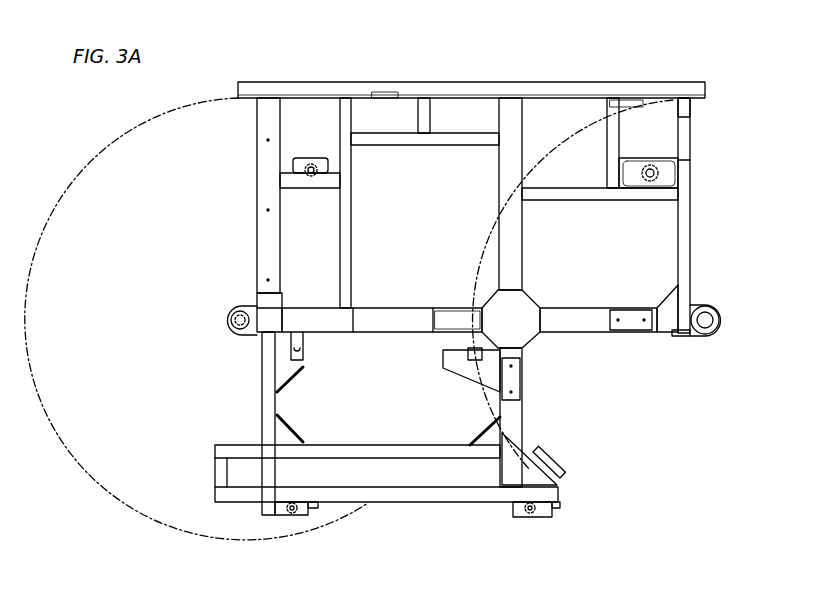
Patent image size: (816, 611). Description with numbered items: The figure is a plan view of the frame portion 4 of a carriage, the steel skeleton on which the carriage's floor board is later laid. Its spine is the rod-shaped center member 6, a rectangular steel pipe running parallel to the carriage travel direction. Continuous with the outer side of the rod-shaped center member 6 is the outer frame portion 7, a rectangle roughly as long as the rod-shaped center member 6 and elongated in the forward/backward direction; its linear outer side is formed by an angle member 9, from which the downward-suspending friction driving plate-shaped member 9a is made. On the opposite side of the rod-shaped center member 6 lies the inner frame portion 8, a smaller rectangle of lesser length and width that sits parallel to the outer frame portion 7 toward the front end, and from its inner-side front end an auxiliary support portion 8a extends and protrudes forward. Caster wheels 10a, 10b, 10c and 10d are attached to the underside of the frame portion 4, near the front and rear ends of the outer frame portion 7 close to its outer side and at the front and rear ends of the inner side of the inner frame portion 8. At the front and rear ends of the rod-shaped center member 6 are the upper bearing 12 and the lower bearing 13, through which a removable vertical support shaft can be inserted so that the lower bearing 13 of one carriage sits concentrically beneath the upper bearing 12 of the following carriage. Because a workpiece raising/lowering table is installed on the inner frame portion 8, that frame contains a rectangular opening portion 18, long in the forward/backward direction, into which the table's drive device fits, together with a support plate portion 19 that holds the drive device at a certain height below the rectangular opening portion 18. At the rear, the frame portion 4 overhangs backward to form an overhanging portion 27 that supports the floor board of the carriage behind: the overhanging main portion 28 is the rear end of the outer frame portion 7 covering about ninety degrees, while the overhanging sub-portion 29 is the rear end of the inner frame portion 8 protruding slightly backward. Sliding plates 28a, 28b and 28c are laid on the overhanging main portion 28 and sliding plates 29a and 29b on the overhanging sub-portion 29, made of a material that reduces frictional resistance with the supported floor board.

The frame portion 4 is at (238, 257).
The rod-shaped center member 6 is at (401, 320).
The outer frame portion 7 is at (257, 228).
The inner frame portion 8 is at (262, 412).
The auxiliary support portion 8a is at (215, 475).
The angle member 9 is at (556, 92).
The friction driving plate-shaped member 9a is at (395, 96).
The caster wheel 10a is at (322, 170).
The caster wheel 10b is at (676, 175).
The caster wheel 10c is at (317, 507).
The caster wheel 10d is at (558, 498).
The upper bearing 12 is at (228, 322).
The lower bearing 13 is at (718, 335).
The rectangular opening portion 18 is at (353, 486).
The support plate portion 19 is at (297, 430).
The overhanging portion 27 is at (641, 217).
The overhanging main portion 28 is at (719, 215).
The sliding plate 28a is at (552, 200).
The sliding plate 28b is at (690, 137).
The sliding plate 28c is at (638, 332).
The overhanging sub-portion 29 is at (567, 417).
The sliding plate 29a is at (522, 368).
The sliding plate 29b is at (556, 468).